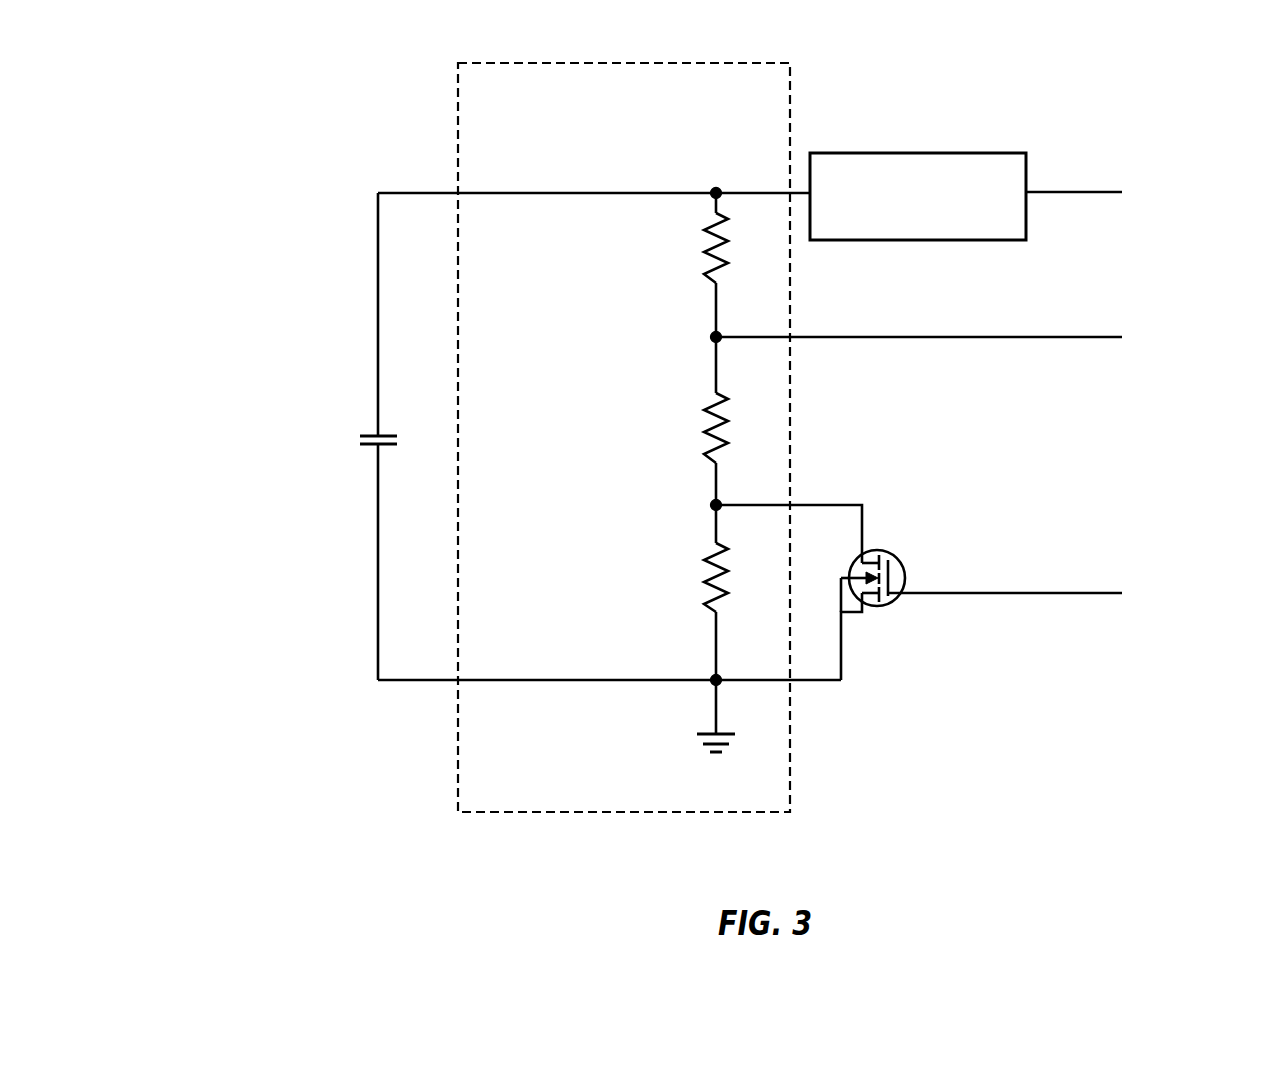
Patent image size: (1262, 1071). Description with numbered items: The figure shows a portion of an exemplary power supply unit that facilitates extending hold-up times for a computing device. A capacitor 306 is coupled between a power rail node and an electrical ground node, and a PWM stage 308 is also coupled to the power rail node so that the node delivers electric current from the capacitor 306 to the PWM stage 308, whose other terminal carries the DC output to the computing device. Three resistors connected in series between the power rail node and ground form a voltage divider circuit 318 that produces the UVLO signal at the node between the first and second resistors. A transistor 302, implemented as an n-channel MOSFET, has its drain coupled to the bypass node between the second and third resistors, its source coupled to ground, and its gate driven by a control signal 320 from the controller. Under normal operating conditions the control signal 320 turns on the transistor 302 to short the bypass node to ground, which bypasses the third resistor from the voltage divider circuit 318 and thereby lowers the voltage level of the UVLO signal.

The voltage divider circuit 318 is at (458, 802).
The capacitor 306 is at (360, 436).
The transistor 302 is at (901, 566).
The pulse-width modulation (PWM) stage 308 is at (918, 196).
The control signal 320 is at (1068, 607).